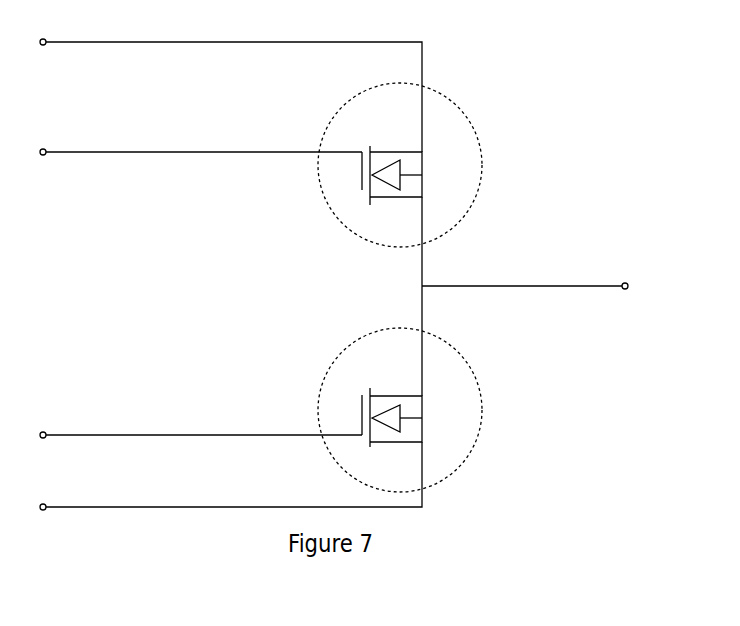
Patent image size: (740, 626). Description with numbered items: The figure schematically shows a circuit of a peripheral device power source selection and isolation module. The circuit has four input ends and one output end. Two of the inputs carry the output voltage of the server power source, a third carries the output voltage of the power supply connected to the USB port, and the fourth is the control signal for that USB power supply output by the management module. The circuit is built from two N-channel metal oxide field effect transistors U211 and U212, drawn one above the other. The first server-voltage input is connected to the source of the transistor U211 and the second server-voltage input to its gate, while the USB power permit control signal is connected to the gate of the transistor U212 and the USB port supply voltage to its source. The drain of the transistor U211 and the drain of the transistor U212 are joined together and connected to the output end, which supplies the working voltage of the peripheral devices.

The N-channel metal oxide field effect transistor U211 is at (400, 165).
The N-channel metal oxide field effect transistor U212 is at (400, 410).